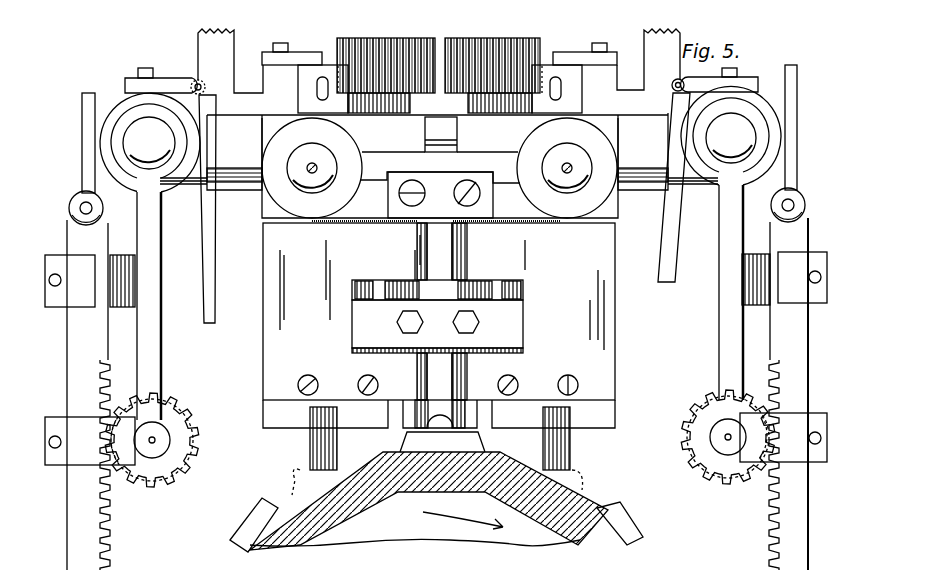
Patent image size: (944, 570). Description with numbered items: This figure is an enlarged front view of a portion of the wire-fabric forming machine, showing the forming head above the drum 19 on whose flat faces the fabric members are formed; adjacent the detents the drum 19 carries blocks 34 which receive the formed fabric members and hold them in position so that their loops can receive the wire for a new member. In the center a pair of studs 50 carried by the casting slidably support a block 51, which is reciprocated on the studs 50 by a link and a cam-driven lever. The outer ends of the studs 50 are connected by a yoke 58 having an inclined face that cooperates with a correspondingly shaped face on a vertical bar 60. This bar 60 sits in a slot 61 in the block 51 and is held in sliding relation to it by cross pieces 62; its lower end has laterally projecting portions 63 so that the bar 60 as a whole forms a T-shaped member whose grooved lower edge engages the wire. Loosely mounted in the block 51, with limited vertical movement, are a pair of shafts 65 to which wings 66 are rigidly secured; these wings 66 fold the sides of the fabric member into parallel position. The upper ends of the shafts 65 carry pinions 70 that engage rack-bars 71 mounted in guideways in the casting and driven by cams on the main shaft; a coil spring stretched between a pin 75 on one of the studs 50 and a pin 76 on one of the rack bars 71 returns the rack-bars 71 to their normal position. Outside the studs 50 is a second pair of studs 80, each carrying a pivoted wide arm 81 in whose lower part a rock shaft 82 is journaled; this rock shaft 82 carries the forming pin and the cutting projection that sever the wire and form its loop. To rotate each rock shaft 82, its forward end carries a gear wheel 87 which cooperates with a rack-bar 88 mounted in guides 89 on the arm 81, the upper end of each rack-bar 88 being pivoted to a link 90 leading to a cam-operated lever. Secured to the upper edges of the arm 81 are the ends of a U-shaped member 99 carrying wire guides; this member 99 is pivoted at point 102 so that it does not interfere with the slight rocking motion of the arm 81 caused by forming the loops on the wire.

The drum 19 is at (429, 501).
The blocks 34 is at (628, 522).
The studs 50 is at (313, 153).
The block 51 is at (440, 168).
The yoke 58 is at (436, 167).
The vertical bar 60 is at (441, 325).
The slot 61 is at (441, 134).
The cross pieces 62 is at (438, 283).
The laterally projecting portions 63 is at (436, 425).
The shafts 65 is at (467, 105).
The wings 66 is at (439, 324).
The pinions 70 is at (462, 48).
The rack-bars 71 is at (330, 70).
The pin 75 is at (566, 164).
The pin 76 is at (318, 88).
The studs 80 is at (142, 125).
The wide arm 81 is at (157, 365).
The rock shaft 82 is at (439, 438).
The gear wheel 87 is at (193, 450).
The rack-bars 88 is at (437, 379).
The guides 89 is at (63, 307).
The link 90 is at (83, 128).
The U-shaped member 99 is at (205, 243).
The pivot point 102 is at (197, 79).